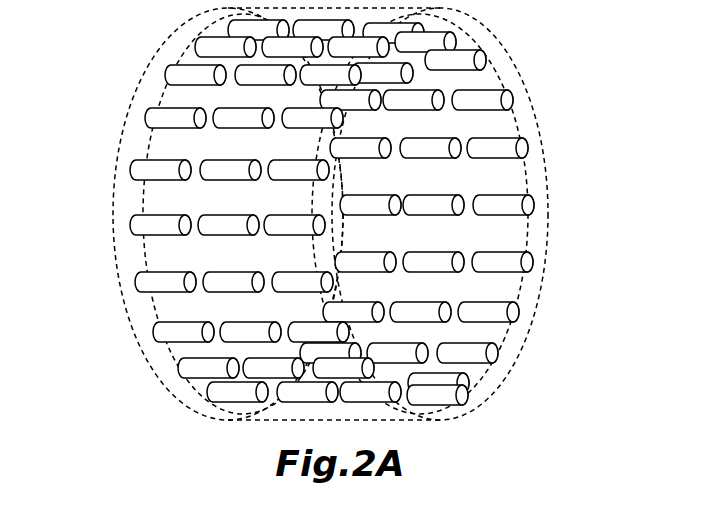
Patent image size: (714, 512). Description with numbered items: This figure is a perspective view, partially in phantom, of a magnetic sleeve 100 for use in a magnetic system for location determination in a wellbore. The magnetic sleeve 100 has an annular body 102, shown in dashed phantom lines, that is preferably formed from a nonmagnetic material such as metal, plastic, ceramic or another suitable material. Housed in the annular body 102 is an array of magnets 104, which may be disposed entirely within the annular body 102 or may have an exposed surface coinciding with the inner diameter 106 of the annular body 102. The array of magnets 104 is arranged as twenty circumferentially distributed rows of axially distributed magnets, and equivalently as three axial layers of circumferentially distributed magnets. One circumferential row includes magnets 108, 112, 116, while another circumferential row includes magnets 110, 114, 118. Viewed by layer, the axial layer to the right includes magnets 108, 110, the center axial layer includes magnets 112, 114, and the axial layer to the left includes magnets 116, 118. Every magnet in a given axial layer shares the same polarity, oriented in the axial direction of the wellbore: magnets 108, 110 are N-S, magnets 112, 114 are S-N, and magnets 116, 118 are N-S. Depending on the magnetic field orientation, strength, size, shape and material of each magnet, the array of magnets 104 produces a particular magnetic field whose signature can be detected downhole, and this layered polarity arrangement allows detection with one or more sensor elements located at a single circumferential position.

The magnetic sleeve 100 is at (334, 213).
The annular body 102 is at (512, 350).
The array of magnets 104 is at (487, 97).
The inner diameter 106 is at (502, 282).
The magnet 108 is at (170, 110).
The magnet 110 is at (157, 177).
The magnet 112 is at (238, 110).
The magnet 114 is at (230, 175).
The magnet 116 is at (308, 110).
The magnet 118 is at (297, 180).